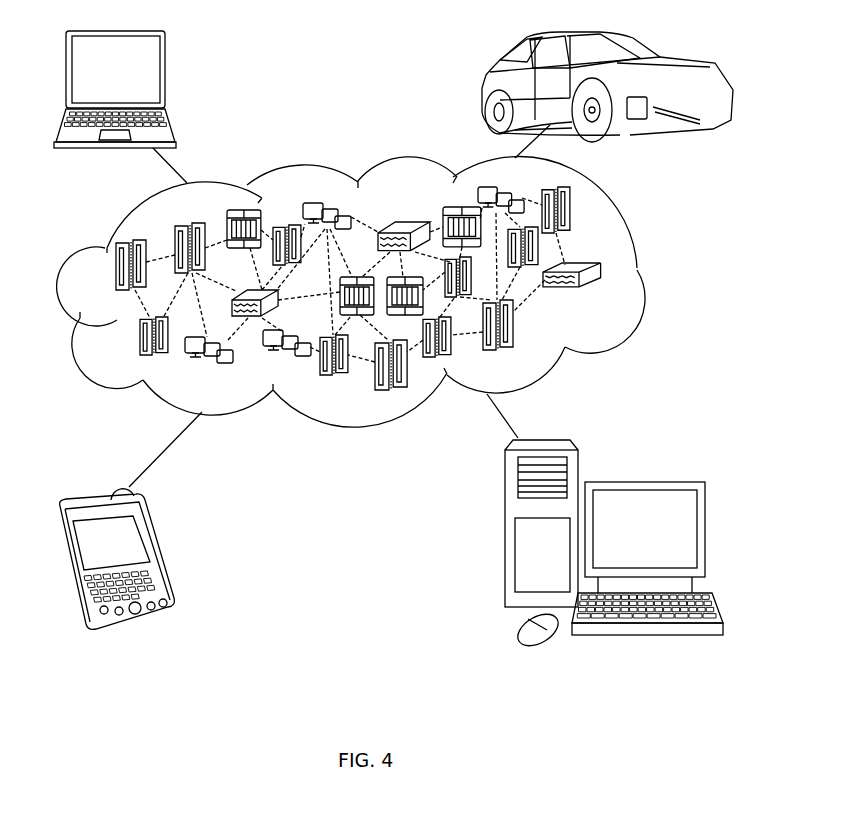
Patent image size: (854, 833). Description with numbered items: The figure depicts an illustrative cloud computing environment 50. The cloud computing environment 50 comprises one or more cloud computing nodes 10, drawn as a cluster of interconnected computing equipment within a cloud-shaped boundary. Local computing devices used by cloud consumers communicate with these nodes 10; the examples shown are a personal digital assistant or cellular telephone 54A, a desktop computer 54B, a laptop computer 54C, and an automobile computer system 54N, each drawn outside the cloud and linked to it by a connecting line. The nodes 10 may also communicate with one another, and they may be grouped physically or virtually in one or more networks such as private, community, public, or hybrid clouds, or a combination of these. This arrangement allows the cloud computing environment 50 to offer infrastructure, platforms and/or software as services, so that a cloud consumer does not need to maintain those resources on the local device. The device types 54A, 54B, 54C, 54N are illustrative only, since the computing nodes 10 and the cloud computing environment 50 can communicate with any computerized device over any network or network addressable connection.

The personal digital assistant (PDA) or cellular telephone 54A is at (158, 551).
The desktop computer 54B is at (642, 482).
The laptop computer 54C is at (165, 75).
The automobile computer system 54N is at (484, 88).
The cloud computing environment 50 is at (642, 270).
The cloud computing node 10 is at (598, 294).